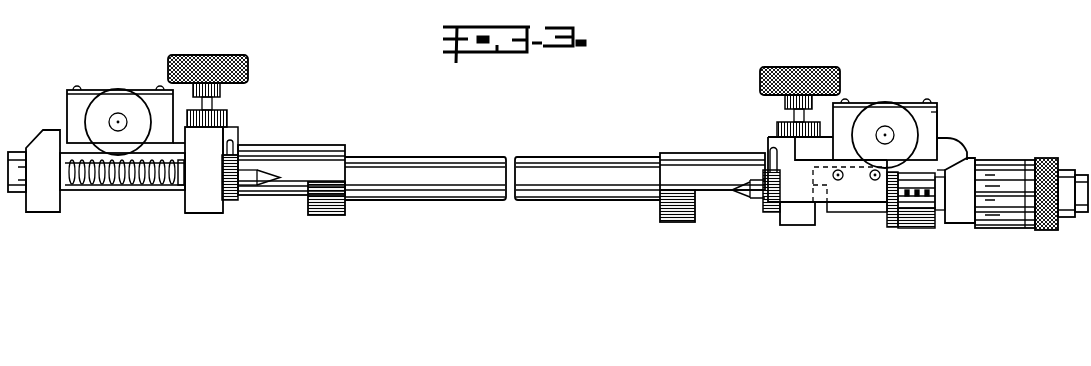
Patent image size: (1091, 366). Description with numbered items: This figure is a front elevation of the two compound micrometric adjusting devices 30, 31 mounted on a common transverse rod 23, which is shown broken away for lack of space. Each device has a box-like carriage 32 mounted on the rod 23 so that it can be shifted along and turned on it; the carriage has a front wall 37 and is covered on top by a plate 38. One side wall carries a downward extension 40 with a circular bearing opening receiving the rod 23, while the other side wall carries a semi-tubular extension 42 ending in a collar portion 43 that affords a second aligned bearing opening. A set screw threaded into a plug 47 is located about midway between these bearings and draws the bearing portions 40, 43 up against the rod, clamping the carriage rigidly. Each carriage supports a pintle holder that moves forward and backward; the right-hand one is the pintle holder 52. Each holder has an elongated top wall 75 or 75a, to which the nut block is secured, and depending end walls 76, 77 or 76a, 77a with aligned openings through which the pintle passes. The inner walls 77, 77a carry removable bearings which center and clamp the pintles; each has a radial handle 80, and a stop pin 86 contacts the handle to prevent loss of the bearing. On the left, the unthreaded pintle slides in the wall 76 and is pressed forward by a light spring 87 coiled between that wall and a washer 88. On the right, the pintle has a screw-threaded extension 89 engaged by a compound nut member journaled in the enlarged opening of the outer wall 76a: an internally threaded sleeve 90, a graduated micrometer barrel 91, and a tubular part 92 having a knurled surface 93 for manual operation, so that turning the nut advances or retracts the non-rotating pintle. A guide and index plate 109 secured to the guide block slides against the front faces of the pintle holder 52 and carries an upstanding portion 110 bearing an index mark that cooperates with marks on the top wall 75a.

The rod 23 is at (470, 167).
The compound micrometric device 30 is at (113, 98).
The compound micrometric device 31 is at (890, 118).
The carriage 32 is at (857, 107).
The front wall 37 is at (940, 123).
The plate 38 is at (927, 125).
The downward extension 40 is at (920, 223).
The semi-tubular extension 42 is at (708, 158).
The collar portion 43 is at (677, 221).
The plug 47 is at (228, 112).
The pintle holder 52 is at (953, 138).
The top wall 75 is at (77, 148).
The top wall 75a is at (940, 170).
The depending wall 76 is at (50, 213).
The depending wall 76a is at (963, 222).
The depending wall 77 is at (217, 215).
The depending wall 77a is at (798, 227).
The radial handle 80 is at (233, 142).
The stop pin 86 is at (238, 146).
The spring 87 is at (148, 190).
The washer 88 is at (182, 193).
The screw-threaded extension 89 is at (895, 208).
The nut sleeve 90 is at (937, 210).
The micrometer barrel 91 is at (1017, 223).
The tubular part 92 is at (1033, 227).
The knurled surface 93 is at (1050, 162).
The guide and index plate 109 is at (847, 200).
The upstanding portion 110 is at (787, 145).